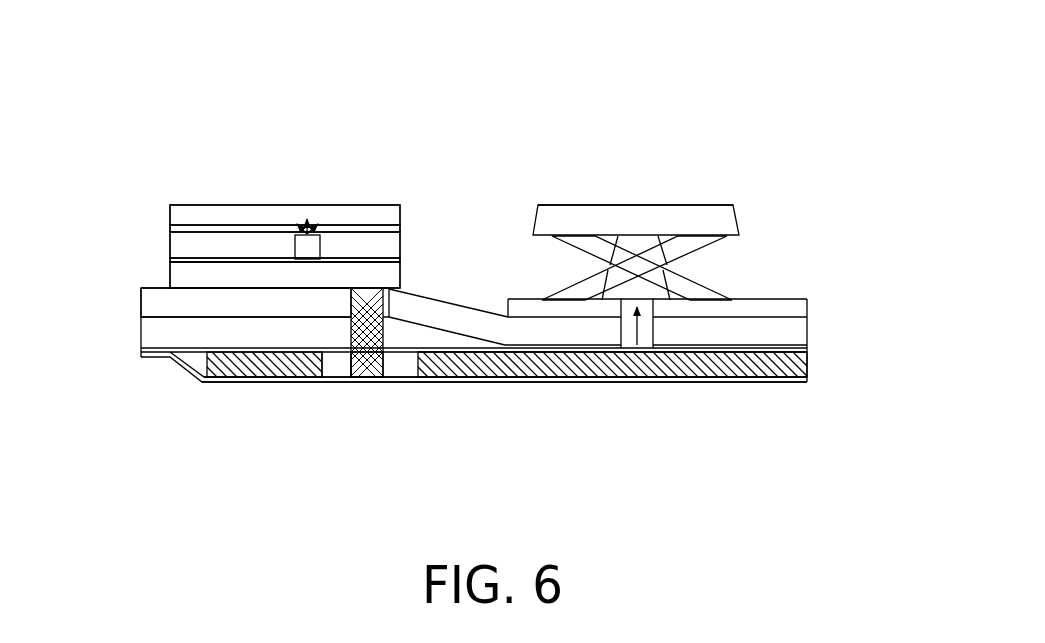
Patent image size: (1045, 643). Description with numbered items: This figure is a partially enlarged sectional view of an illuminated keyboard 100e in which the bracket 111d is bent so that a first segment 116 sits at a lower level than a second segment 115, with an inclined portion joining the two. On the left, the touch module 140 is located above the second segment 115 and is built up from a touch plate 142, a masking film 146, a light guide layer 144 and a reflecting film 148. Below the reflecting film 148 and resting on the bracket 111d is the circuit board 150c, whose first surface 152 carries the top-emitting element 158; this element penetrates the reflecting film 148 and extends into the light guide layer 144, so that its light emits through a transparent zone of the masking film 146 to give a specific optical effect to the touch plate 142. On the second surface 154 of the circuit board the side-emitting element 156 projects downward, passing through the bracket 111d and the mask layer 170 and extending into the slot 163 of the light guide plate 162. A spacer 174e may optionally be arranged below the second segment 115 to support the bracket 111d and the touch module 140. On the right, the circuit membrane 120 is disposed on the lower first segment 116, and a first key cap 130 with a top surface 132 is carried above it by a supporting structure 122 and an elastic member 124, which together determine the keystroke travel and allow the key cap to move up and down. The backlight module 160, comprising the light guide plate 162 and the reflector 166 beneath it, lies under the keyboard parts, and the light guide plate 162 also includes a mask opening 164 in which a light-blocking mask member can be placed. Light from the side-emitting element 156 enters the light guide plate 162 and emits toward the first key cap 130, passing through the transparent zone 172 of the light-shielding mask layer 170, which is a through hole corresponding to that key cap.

The illuminated keyboard 100e is at (100, 72).
The touch module 140 is at (72, 135).
The touch plate 142 is at (170, 215).
The masking film 146 is at (170, 231).
The light guide layer 144 is at (170, 245).
The reflecting film 148 is at (170, 260).
The circuit board 150c is at (167, 273).
The first surface 152 is at (233, 256).
The top-emitting element 158 is at (317, 246).
The second surface 154 is at (237, 292).
The second segment 115 is at (157, 298).
The first segment 116 is at (795, 332).
The bracket 111d is at (476, 326).
The spacer 174e is at (157, 337).
The circuit membrane 120 is at (795, 310).
The supporting structure 122 is at (693, 245).
The elastic member 124 is at (630, 247).
The first key cap 130 is at (578, 212).
The top surface 132 is at (637, 202).
The backlight module 160 is at (557, 387).
The light guide plate 162 is at (795, 365).
The reflector 166 is at (797, 378).
The mask opening 164 is at (347, 365).
The slot 163 is at (323, 366).
The side-emitting element 156 is at (362, 375).
The mask layer 170 is at (555, 349).
The transparent zone 172 is at (637, 353).